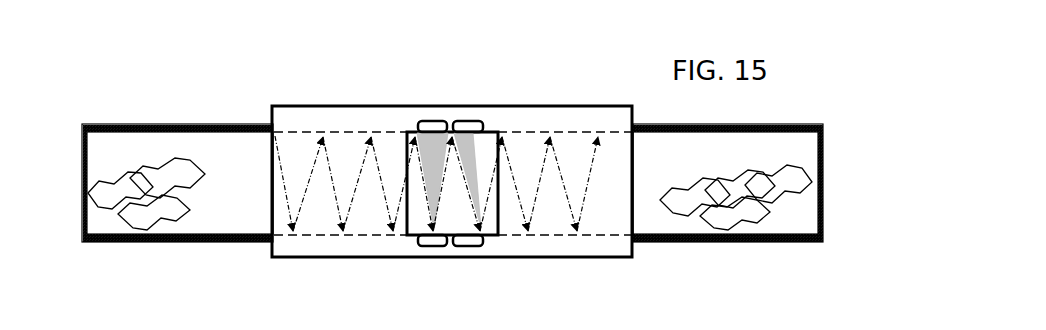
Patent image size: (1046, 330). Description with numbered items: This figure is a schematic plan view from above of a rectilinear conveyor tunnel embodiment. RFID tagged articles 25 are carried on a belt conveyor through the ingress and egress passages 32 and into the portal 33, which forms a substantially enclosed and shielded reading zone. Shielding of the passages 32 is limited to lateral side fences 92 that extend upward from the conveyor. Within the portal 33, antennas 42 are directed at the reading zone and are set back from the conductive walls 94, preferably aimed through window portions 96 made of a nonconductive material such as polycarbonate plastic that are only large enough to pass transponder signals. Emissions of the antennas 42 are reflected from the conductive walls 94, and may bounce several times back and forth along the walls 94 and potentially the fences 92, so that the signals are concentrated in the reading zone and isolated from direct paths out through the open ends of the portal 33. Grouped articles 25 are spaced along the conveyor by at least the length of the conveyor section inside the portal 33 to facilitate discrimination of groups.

The ingress and egress passages 32 is at (118, 155).
The lateral side fences 92 is at (220, 123).
The RFID tagged articles 25 is at (785, 182).
The portal 33 is at (505, 115).
The window portions 96 is at (410, 236).
The antennas 42 is at (440, 120).
The conductive walls 94 is at (533, 236).